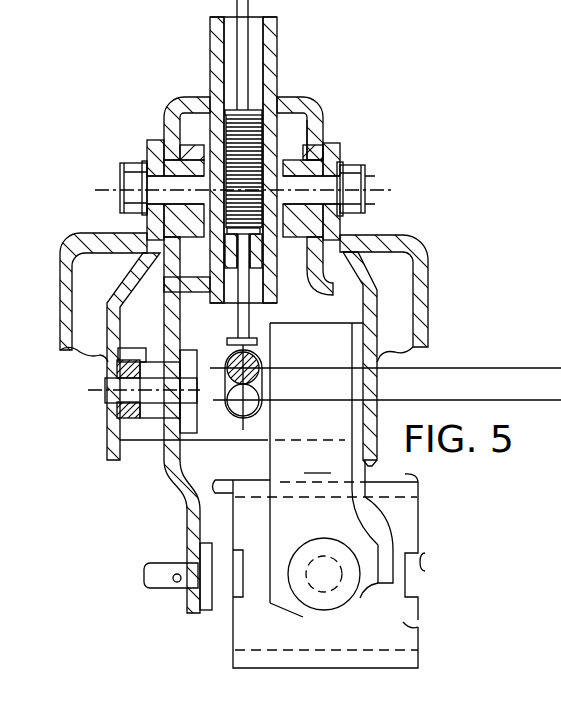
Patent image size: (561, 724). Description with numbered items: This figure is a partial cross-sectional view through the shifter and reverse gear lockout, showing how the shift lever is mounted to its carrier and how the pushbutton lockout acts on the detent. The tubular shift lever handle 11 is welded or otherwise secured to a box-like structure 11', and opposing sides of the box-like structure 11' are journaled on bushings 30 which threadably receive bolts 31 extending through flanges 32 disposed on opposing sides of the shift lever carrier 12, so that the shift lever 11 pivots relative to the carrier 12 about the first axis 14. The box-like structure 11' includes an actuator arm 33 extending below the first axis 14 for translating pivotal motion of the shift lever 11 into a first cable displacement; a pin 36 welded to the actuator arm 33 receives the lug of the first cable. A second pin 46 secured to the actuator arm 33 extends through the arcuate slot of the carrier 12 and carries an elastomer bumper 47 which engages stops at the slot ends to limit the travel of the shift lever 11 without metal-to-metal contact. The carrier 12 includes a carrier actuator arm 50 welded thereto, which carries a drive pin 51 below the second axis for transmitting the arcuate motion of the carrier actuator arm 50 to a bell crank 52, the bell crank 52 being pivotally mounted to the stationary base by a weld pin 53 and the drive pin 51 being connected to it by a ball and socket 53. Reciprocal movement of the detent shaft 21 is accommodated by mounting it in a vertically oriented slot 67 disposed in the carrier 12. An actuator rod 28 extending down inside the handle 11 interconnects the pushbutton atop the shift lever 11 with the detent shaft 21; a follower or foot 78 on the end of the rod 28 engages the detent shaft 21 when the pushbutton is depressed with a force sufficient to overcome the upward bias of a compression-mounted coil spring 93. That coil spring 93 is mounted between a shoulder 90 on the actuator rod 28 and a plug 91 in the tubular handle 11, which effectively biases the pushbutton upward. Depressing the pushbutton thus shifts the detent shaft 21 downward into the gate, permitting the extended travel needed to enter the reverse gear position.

The shift lever 11 is at (276, 160).
The box-like structure 11' is at (350, 123).
The shift lever carrier 12 is at (360, 267).
The first axis 14 is at (377, 188).
The detent shaft 21 is at (255, 365).
The rod 28 is at (267, 57).
The bushing 30 is at (200, 123).
The bolt 31 is at (120, 182).
The flange 32 is at (150, 140).
The actuator arm 33 is at (177, 473).
The pin 36 is at (162, 587).
The second pin 46 is at (150, 405).
The elastomer bumper 47 is at (113, 368).
The carrier actuator arm 50 is at (325, 495).
The drive pin 51 is at (330, 570).
The bell crank 52 is at (400, 490).
The weld pin 53 is at (425, 562).
The slot 67 is at (258, 395).
The follower or foot 78 is at (250, 337).
The shoulder 90 is at (317, 113).
The plug 91 is at (257, 242).
The coil spring 93 is at (263, 200).